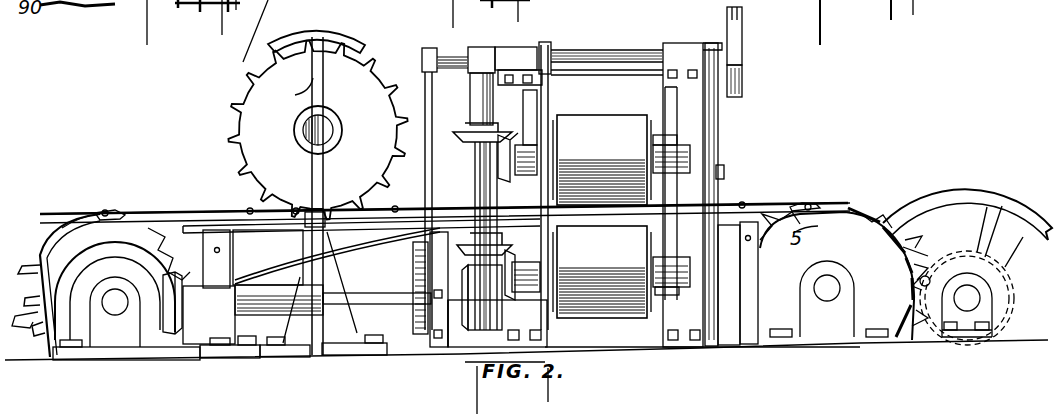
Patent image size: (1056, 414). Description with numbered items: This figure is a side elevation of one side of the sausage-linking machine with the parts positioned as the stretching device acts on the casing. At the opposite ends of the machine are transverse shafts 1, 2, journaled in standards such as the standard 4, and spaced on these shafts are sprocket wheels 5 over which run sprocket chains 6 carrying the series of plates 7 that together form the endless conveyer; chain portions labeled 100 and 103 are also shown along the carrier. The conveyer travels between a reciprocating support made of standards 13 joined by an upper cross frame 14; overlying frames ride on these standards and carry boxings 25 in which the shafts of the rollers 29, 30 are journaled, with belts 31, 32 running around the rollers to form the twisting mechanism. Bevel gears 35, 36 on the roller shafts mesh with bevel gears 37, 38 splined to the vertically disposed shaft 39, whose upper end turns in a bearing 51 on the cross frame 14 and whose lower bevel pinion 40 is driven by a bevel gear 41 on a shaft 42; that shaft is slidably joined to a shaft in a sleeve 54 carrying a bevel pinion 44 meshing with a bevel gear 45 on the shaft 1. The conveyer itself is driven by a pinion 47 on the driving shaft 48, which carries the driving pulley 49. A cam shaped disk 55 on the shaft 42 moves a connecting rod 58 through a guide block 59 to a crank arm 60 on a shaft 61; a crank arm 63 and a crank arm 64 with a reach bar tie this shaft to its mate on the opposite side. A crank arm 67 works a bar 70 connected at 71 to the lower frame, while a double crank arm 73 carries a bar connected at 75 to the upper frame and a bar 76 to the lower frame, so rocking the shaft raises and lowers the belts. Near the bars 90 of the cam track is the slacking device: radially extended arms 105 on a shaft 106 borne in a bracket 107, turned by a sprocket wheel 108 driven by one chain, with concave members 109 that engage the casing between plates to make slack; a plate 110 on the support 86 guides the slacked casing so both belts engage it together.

The transverse shaft 1 is at (115, 302).
The transverse shaft 2 is at (827, 288).
The standard 4 is at (837, 276).
The sprocket wheel 5 is at (108, 231).
The sprocket chain 6 is at (176, 196).
The plate 7 is at (134, 213).
The standard 13 is at (694, 193).
The cross frame 14 is at (628, 70).
The boxing 25 is at (678, 158).
The roller 29 is at (652, 118).
The roller 30 is at (660, 310).
The belt 31 is at (602, 160).
The belt 32 is at (602, 272).
The bevel gear 35 is at (516, 135).
The bevel gear 36 is at (495, 297).
The bevel gear 37 is at (480, 98).
The bevel gear 38 is at (503, 247).
The vertically disposed shaft 39 is at (518, 66).
The bevel pinion 40 is at (485, 320).
The bevel gear 41 is at (468, 318).
The shaft 42 is at (390, 278).
The bevel pinion 44 is at (170, 305).
The bevel gear 45 is at (72, 268).
The pinion 47 is at (975, 246).
The driving shaft 48 is at (972, 295).
The driving pulley 49 is at (984, 172).
The bearing 51 is at (482, 62).
The sleeve 54 is at (285, 303).
The cam shaped disk 55 is at (416, 320).
The connecting rod 58 is at (445, 160).
The guide block 59 is at (440, 251).
The crank arm 60 is at (424, 58).
The shaft 61 is at (610, 36).
The crank arm 63 is at (736, 34).
The crank arm 64 is at (745, 80).
The crank arm 67 is at (552, 52).
The bar 70 is at (551, 118).
The connection 71 is at (525, 275).
The double crank arm 73 is at (712, 42).
The connection 75 is at (726, 172).
The bar 76 is at (722, 240).
The support 86 is at (766, 315).
The bar of the cam track 90 is at (200, 226).
The chain link 100 is at (822, 192).
The chain link 103 is at (112, 196).
The radially extended arm 105 is at (294, 81).
The shaft 106 is at (310, 134).
The standard or bracket 107 is at (340, 343).
The sprocket wheel 108 is at (317, 129).
The member 109 is at (328, 13).
The plate 110 is at (288, 262).